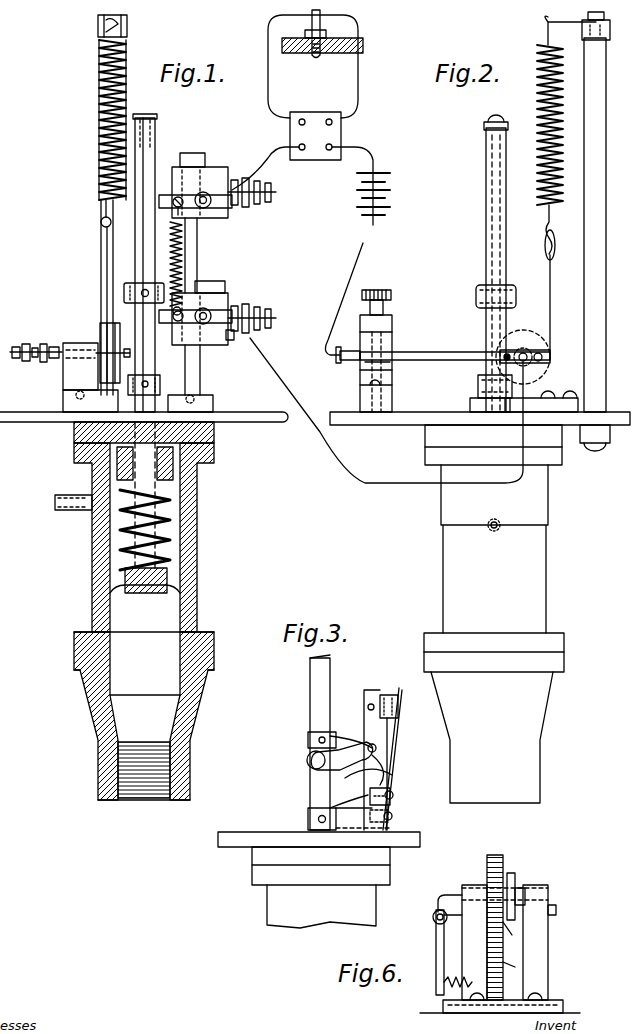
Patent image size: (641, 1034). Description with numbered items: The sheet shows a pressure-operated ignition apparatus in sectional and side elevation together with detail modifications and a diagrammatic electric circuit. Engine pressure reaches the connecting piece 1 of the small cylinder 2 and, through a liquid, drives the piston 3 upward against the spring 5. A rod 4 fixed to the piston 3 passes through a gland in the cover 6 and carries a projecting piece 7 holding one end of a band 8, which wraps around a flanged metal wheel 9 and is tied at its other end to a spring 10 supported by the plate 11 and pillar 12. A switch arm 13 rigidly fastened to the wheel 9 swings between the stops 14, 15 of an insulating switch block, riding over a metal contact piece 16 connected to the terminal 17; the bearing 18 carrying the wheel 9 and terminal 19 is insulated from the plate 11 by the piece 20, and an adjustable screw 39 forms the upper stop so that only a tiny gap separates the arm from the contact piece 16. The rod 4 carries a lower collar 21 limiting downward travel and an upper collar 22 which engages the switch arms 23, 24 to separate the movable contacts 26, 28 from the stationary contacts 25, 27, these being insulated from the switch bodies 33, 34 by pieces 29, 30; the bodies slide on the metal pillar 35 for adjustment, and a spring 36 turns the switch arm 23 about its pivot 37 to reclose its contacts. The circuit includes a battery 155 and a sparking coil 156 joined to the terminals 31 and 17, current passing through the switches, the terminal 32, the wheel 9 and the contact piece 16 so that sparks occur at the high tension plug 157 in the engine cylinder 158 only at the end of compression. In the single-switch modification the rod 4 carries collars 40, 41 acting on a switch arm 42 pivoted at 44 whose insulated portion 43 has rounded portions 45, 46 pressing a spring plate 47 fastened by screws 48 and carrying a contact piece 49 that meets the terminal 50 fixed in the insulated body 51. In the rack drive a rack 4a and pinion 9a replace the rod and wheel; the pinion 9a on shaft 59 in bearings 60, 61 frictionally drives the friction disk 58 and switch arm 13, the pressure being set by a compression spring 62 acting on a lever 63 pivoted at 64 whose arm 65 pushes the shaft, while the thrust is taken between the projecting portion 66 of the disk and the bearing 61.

In FIG. 1, the connecting piece 1 is at (144, 716).
In FIG. 2, the connecting piece 1 is at (492, 737).
In FIG. 1, the small cylinder 2 is at (197, 540).
In FIG. 2, the small cylinder 2 is at (494, 568).
In FIG. 1, the piston 3 is at (145, 595).
In FIG. 1, the rod 4 is at (143, 250).
In FIG. 2, the rod 4 is at (486, 190).
In FIG. 3, the rod 4 is at (310, 683).
In FIG. 1, the spring 5 is at (170, 520).
In FIG. 1, the cover 6 is at (210, 432).
In FIG. 2, the cover 6 is at (425, 438).
In FIG. 3, the cover 6 is at (262, 860).
In FIG. 1, the projecting piece 7 is at (135, 118).
In FIG. 2, the projecting piece 7 is at (484, 125).
In FIG. 1, the band 8 is at (101, 248).
In FIG. 2, the band 8 is at (556, 305).
In FIG. 1, the flanged metal wheel 9 is at (102, 330).
In FIG. 2, the flanged metal wheel 9 is at (535, 340).
In FIG. 1, the spring 10 is at (98, 98).
In FIG. 2, the spring 10 is at (537, 98).
In FIG. 1, the plate 11 is at (257, 422).
In FIG. 2, the plate 11 is at (612, 412).
In FIG. 3, the plate 11 is at (253, 838).
In FIG. 1, the pillar 12 is at (101, 222).
In FIG. 2, the pillar 12 is at (553, 215).
In FIG. 2, the switch arm 13 is at (455, 349).
In FIG. 2, the upper stop 14 is at (392, 322).
In FIG. 2, the lower stop 15 is at (360, 380).
In FIG. 2, the contact piece 16 is at (392, 362).
In FIG. 2, the terminal 17 is at (345, 350).
In FIG. 1, the bearing 18 is at (80, 366).
In FIG. 2, the bearing 18 is at (541, 390).
In FIG. 1, the terminal 19 is at (44, 344).
In FIG. 1, the insulating piece 20 is at (70, 402).
In FIG. 2, the insulating piece 20 is at (515, 412).
In FIG. 1, the lower collar 21 is at (200, 370).
In FIG. 2, the lower collar 21 is at (478, 385).
In FIG. 1, the upper collar 22 is at (124, 286).
In FIG. 2, the upper collar 22 is at (476, 289).
In FIG. 1, the switch arm 23 is at (197, 285).
In FIG. 1, the switch arm 24 is at (188, 225).
In FIG. 1, the stationary contact 25 is at (234, 335).
In FIG. 1, the movable contact 26 is at (228, 295).
In FIG. 1, the stationary contact 27 is at (234, 184).
In FIG. 1, the movable contact 28 is at (230, 208).
In FIG. 1, the insulating piece 29 is at (225, 344).
In FIG. 1, the insulating piece 30 is at (222, 167).
In FIG. 1, the terminal 31 is at (276, 192).
In FIG. 1, the terminal 32 is at (272, 317).
In FIG. 1, the switch body 33 is at (192, 153).
In FIG. 1, the switch body 34 is at (195, 340).
In FIG. 1, the metal pillar 35 is at (210, 396).
In FIG. 1, the spring 36 is at (170, 250).
In FIG. 1, the pivot 37 is at (224, 285).
In FIG. 2, the adjustable screw 39 is at (376, 290).
In FIG. 3, the lower collar 40 is at (308, 820).
In FIG. 3, the upper collar 41 is at (308, 740).
In FIG. 3, the switch arm 42 is at (308, 762).
In FIG. 3, the insulated portion 43 is at (364, 770).
In FIG. 3, the pivot 44 is at (330, 736).
In FIG. 3, the rounded portion 45 is at (372, 744).
In FIG. 3, the rounded portion 46 is at (351, 796).
In FIG. 3, the spring plate 47 is at (392, 818).
In FIG. 3, the screws 48 is at (370, 796).
In FIG. 3, the contact piece 49 is at (388, 695).
In FIG. 3, the terminal 50 is at (366, 706).
In FIG. 3, the insulated body 51 is at (372, 690).
In FIG. 6, the friction disk 58 is at (505, 878).
In FIG. 6, the shaft 59 is at (559, 909).
In FIG. 6, the bearing 60 is at (474, 885).
In FIG. 6, the bearing 61 is at (548, 890).
In FIG. 6, the compression spring 62 is at (444, 982).
In FIG. 6, the lever 63 is at (438, 945).
In FIG. 6, the pivot 64 is at (460, 920).
In FIG. 6, the arm 65 is at (442, 895).
In FIG. 6, the projecting portion 66 is at (522, 888).
In FIG. 6, the rack 4a is at (506, 933).
In FIG. 6, the pinion 9a is at (509, 965).
In FIG. 1, the battery 155 is at (372, 264).
In FIG. 1, the sparking coil 156 is at (302, 102).
In FIG. 1, the high tension plug 157 is at (328, 32).
In FIG. 1, the engine cylinder 158 is at (364, 46).